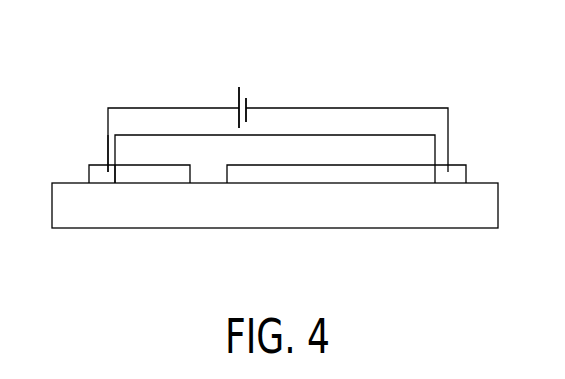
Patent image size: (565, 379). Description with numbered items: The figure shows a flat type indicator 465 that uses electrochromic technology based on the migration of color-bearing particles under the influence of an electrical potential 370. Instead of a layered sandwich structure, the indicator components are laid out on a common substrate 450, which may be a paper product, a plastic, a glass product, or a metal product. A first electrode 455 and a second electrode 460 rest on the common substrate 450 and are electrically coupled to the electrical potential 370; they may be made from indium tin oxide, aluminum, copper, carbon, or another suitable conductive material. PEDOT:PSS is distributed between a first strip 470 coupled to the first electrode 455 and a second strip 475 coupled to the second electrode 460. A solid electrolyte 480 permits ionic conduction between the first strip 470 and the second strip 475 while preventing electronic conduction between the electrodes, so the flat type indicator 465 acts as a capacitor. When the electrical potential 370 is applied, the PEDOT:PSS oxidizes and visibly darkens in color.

The electrical potential 370 is at (245, 90).
The common substrate 450 is at (312, 210).
The first electrode 455 is at (467, 175).
The second electrode 460 is at (88, 171).
The flat type indicator 465 is at (453, 255).
The first strip 470 is at (405, 162).
The second strip 475 is at (138, 172).
The solid electrolyte 480 is at (294, 147).